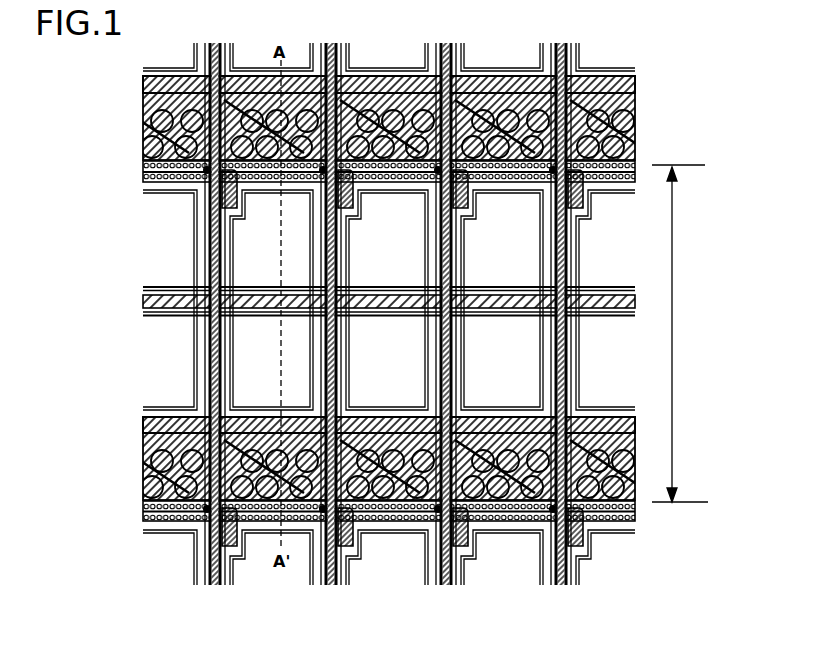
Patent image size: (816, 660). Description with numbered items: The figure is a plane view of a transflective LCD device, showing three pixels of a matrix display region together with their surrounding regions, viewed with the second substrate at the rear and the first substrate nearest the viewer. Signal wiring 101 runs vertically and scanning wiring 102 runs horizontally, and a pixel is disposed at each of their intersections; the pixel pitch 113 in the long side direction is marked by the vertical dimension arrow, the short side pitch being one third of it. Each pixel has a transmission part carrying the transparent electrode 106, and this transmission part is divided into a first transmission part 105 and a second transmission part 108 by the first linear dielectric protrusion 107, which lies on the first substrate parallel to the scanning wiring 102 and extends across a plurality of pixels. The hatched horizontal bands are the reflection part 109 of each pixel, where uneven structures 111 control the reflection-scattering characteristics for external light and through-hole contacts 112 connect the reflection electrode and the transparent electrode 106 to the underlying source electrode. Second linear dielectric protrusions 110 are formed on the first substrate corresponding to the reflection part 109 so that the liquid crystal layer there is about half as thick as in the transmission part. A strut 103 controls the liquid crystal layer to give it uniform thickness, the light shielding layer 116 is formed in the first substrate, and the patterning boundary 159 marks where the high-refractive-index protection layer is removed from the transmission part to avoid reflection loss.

The signal wiring 101 is at (322, 567).
The scanning wiring 102 is at (398, 519).
The strut 103 is at (545, 506).
The first transmission part 105 is at (185, 286).
The transparent electrode 106 is at (204, 244).
The first linear dielectric protrusion 107 is at (133, 308).
The second transmission part 108 is at (245, 378).
The reflection part 109 is at (336, 457).
The second linear dielectric protrusion 110 is at (143, 500).
The uneven structures 111 is at (388, 82).
The through-hole contacts 112 is at (519, 84).
The pixel pitch 113 is at (672, 367).
The light shielding layer 116 is at (186, 284).
The patterning boundary 159 is at (580, 277).